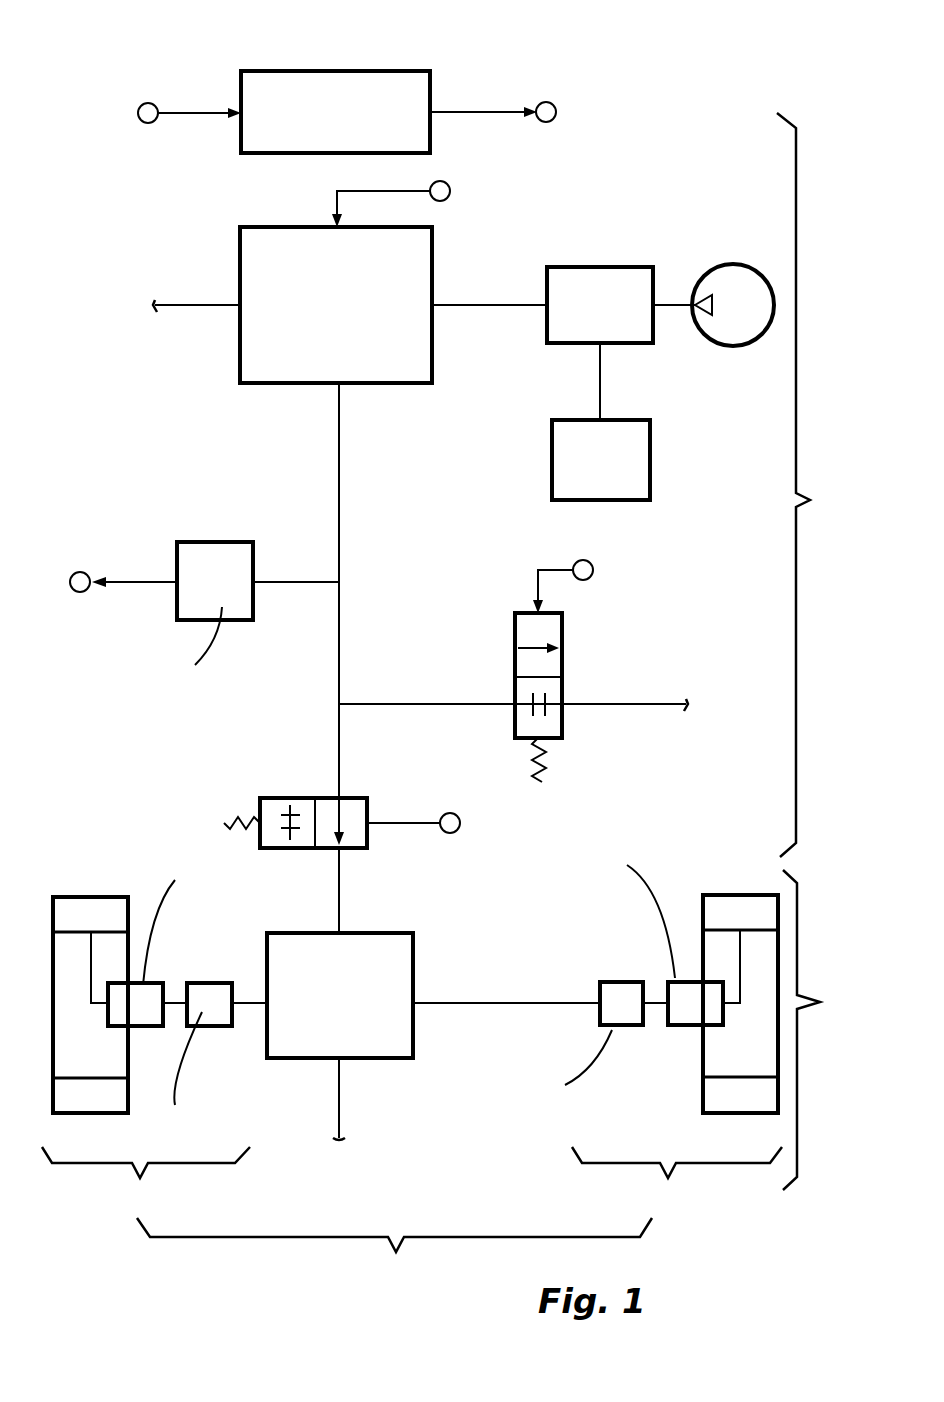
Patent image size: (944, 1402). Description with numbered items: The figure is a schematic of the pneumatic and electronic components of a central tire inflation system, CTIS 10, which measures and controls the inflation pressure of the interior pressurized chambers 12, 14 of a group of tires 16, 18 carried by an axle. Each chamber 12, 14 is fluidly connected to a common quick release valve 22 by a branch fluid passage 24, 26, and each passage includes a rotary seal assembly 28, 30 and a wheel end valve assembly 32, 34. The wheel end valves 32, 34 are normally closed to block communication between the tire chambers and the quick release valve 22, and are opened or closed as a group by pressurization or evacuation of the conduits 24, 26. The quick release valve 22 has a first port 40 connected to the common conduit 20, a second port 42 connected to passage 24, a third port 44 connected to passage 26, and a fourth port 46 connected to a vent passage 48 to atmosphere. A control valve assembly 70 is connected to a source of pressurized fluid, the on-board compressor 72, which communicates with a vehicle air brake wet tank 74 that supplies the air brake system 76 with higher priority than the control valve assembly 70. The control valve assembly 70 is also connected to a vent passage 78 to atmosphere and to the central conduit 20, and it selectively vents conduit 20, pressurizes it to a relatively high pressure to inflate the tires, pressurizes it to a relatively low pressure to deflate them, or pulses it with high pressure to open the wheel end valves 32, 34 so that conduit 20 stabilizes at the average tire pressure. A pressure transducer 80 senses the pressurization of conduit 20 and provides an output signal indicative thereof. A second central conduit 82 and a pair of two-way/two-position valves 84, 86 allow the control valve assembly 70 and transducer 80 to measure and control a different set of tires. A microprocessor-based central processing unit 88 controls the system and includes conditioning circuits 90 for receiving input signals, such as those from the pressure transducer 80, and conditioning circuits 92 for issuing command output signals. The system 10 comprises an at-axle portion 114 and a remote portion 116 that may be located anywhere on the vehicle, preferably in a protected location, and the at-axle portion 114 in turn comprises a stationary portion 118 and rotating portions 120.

The CTIS 10 is at (664, 76).
The interior pressurized chamber 12 is at (742, 912).
The interior pressurized chamber 14 is at (75, 905).
The tire 16 is at (778, 948).
The tire 18 is at (130, 948).
The common conduit 20 is at (348, 752).
The quick release valve 22 is at (414, 916).
The branch fluid passage 24 is at (492, 1000).
The branch fluid passage 26 is at (253, 993).
The rotary seal assembly 28 is at (620, 990).
The rotary seal assembly 30 is at (196, 1000).
The wheel end valve assembly 32 is at (690, 1030).
The wheel end valve assembly 34 is at (138, 1012).
The first port 40 is at (342, 928).
The second port 42 is at (415, 995).
The third port 44 is at (265, 1012).
The fourth port 46 is at (345, 1062).
The vent passage 48 is at (340, 1118).
The control valve assembly 70 is at (414, 264).
The on-board compressor 72 is at (745, 285).
The vehicle air brake wet tank 74 is at (575, 275).
The air brake system 76 is at (567, 435).
The vent passage 78 is at (197, 307).
The pressure transducer 80 is at (214, 562).
The second central conduit 82 is at (625, 703).
The two-way/two-position valve 84 is at (562, 632).
The two-way/two-position valve 86 is at (275, 800).
The central processing unit 88 is at (424, 71).
The conditioning circuits 90 is at (188, 112).
The conditioning circuits 92 is at (495, 112).
The at-axle portion 114 is at (825, 1030).
The remote portion 116 is at (818, 485).
The stationary portion 118 is at (394, 1250).
The rotating portions 120 is at (412, 1178).